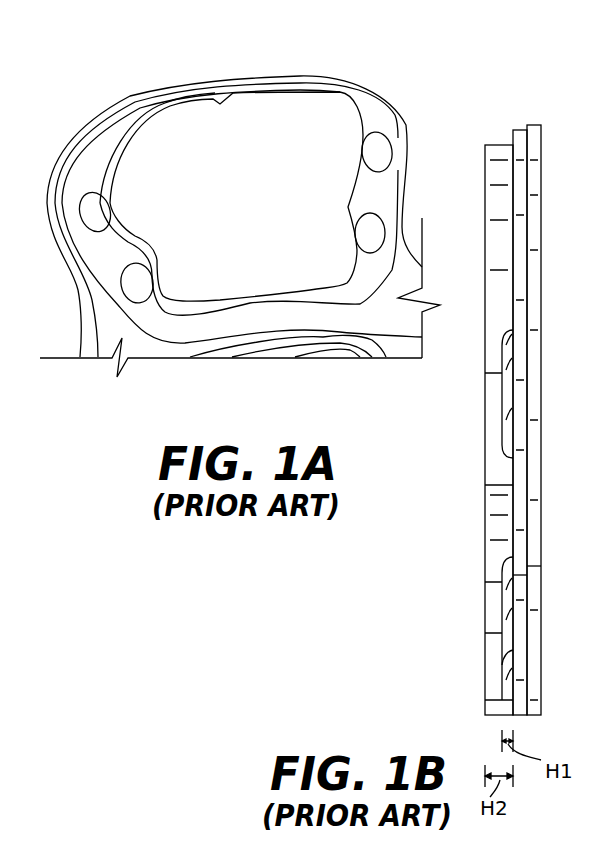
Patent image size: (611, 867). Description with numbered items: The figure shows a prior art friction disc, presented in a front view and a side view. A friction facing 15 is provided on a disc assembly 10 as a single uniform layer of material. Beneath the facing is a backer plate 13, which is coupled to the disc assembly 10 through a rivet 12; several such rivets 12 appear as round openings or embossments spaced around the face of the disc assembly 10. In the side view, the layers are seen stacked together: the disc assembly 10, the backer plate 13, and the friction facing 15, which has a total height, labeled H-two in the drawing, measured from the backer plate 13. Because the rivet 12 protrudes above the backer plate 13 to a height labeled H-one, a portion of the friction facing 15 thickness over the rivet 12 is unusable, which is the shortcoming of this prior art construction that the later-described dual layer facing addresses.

In FIG. 1A, the disc assembly 10 is at (378, 72).
In FIG. 1B, the disc assembly 10 is at (548, 135).
In FIG. 1A, the rivet 12 is at (383, 155).
In FIG. 1B, the rivet 12 is at (510, 380).
In FIG. 1A, the backer plate 13 is at (87, 167).
In FIG. 1B, the backer plate 13 is at (523, 132).
In FIG. 1A, the friction facing 15 is at (302, 107).
In FIG. 1B, the friction facing 15 is at (496, 519).